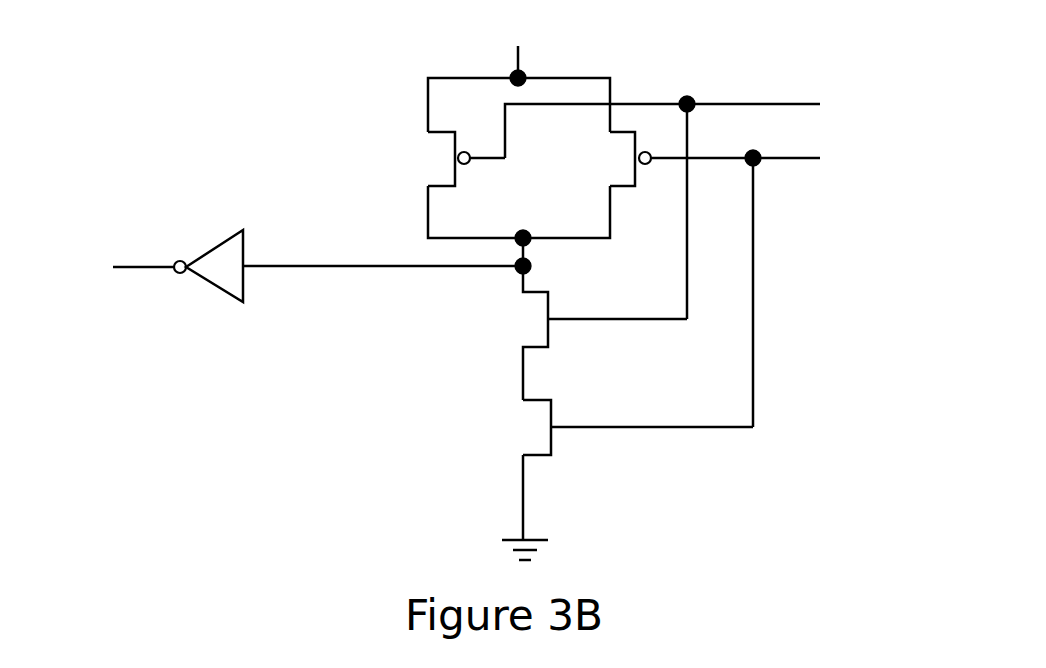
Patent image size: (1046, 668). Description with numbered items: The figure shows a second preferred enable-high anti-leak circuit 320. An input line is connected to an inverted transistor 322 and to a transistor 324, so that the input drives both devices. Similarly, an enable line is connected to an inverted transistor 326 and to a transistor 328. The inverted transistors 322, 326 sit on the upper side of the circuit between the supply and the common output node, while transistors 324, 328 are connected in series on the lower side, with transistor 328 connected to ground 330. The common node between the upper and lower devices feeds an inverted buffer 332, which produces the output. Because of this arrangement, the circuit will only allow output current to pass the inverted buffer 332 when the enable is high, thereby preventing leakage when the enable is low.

The enable-high anti-leak circuit 320 is at (782, 37).
The inverted transistor 322 is at (457, 173).
The transistor 324 is at (555, 330).
The inverted transistor 326 is at (638, 172).
The transistor 328 is at (557, 443).
The ground 330 is at (537, 552).
The inverted buffer 332 is at (222, 243).